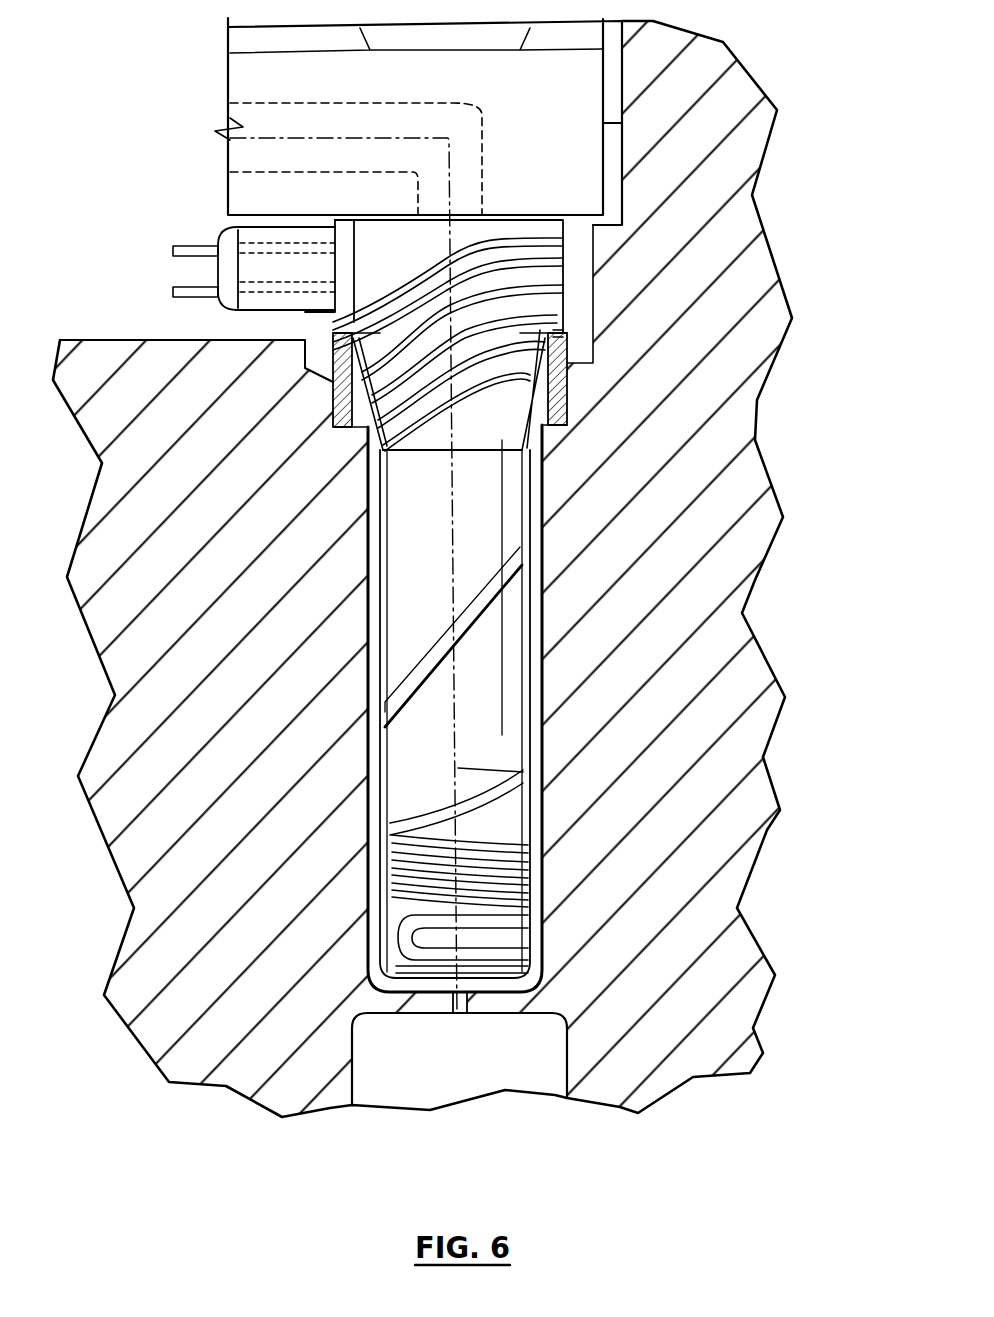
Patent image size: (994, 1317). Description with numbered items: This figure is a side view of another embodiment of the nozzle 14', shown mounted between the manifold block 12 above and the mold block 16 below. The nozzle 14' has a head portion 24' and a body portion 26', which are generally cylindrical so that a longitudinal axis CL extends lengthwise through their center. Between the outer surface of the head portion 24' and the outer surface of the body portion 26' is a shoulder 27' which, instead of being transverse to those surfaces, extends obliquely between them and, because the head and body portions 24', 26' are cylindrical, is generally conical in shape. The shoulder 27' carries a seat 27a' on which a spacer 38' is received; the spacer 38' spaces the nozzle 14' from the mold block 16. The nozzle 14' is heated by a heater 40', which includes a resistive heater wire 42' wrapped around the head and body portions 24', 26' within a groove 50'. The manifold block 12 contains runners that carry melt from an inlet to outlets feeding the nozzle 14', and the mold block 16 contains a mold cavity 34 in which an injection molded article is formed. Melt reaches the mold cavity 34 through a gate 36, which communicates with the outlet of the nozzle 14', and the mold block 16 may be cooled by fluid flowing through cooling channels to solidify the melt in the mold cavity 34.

The manifold block 12 is at (620, 123).
The nozzle 14' is at (591, 284).
The mold block 16 is at (652, 670).
The head portion 24' is at (232, 271).
The body portion 26' is at (406, 606).
The shoulder 27' is at (611, 396).
The seat 27a' is at (609, 344).
The mold cavity 34 is at (372, 1070).
The gate 36 is at (465, 998).
The spacer 38' is at (586, 392).
The heater 40' is at (204, 293).
The resistive heater wire 42' is at (532, 633).
The groove 50' is at (590, 304).
The longitudinal axis CL is at (455, 763).